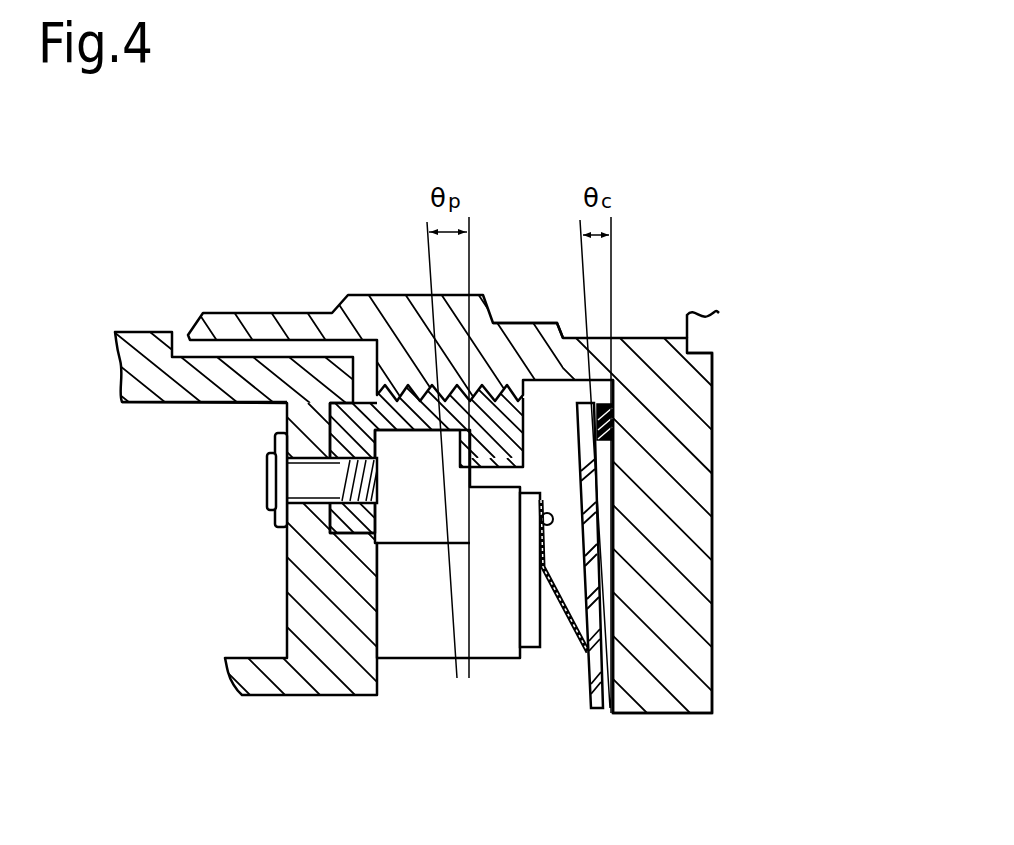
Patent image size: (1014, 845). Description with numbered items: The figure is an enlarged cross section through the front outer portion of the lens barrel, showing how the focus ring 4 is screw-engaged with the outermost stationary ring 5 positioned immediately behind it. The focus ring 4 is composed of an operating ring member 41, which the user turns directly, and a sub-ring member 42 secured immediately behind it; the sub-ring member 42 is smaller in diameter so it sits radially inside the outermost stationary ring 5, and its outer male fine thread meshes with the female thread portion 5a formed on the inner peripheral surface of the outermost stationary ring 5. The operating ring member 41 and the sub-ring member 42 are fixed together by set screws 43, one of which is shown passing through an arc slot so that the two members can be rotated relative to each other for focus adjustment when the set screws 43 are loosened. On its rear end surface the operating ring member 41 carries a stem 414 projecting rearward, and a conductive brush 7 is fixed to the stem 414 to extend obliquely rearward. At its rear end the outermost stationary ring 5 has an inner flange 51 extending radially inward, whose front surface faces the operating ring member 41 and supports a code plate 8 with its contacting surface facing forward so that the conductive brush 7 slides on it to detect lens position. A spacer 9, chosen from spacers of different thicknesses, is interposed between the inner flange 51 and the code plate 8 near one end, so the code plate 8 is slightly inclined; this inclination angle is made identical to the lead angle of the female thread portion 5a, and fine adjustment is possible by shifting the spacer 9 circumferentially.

The focus ring 4 is at (137, 332).
The operating ring member 41 is at (218, 401).
The sub-ring member 42 is at (362, 447).
The set screw 43 is at (270, 485).
The stem 414 is at (433, 638).
The outermost stationary ring 5 is at (293, 322).
The female thread portion 5a is at (505, 372).
The inner flange 51 is at (690, 662).
The conductive brush 7 is at (562, 613).
The code plate 8 is at (590, 532).
The spacer 9 is at (613, 417).